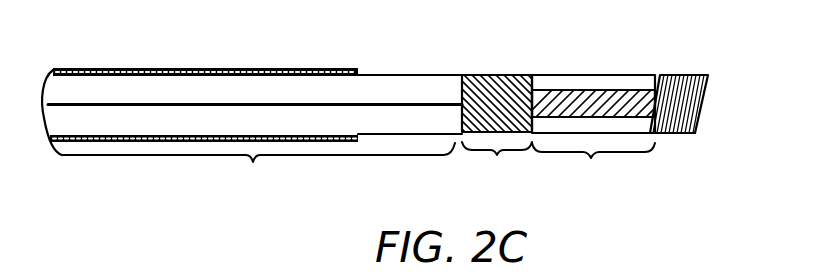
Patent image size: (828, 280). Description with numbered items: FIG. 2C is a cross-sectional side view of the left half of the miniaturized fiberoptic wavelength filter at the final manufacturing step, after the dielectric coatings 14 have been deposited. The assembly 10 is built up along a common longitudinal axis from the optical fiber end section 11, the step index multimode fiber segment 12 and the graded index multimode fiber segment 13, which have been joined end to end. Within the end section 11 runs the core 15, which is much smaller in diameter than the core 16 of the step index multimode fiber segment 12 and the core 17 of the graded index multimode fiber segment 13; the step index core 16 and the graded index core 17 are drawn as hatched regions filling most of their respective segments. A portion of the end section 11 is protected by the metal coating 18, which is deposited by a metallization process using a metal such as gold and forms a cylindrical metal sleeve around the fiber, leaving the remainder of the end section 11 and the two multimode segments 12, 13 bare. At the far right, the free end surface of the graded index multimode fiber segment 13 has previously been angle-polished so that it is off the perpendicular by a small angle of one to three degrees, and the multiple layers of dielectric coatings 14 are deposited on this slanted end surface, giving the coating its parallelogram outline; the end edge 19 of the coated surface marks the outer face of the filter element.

The cannula assembly 10 is at (395, 122).
The optical fiber end section 11 is at (252, 132).
The step index multimode fiber segment 12 is at (497, 164).
The graded index multimode fiber segment 13 is at (593, 134).
The dielectric coatings 14 is at (662, 79).
The core of the optical fiber end section 15 is at (255, 62).
The core of the step index multimode fiber segment 16 is at (503, 82).
The core of the graded index multimode fiber segment 17 is at (606, 72).
The metal coating 18 is at (204, 78).
The end edge 19 is at (710, 153).